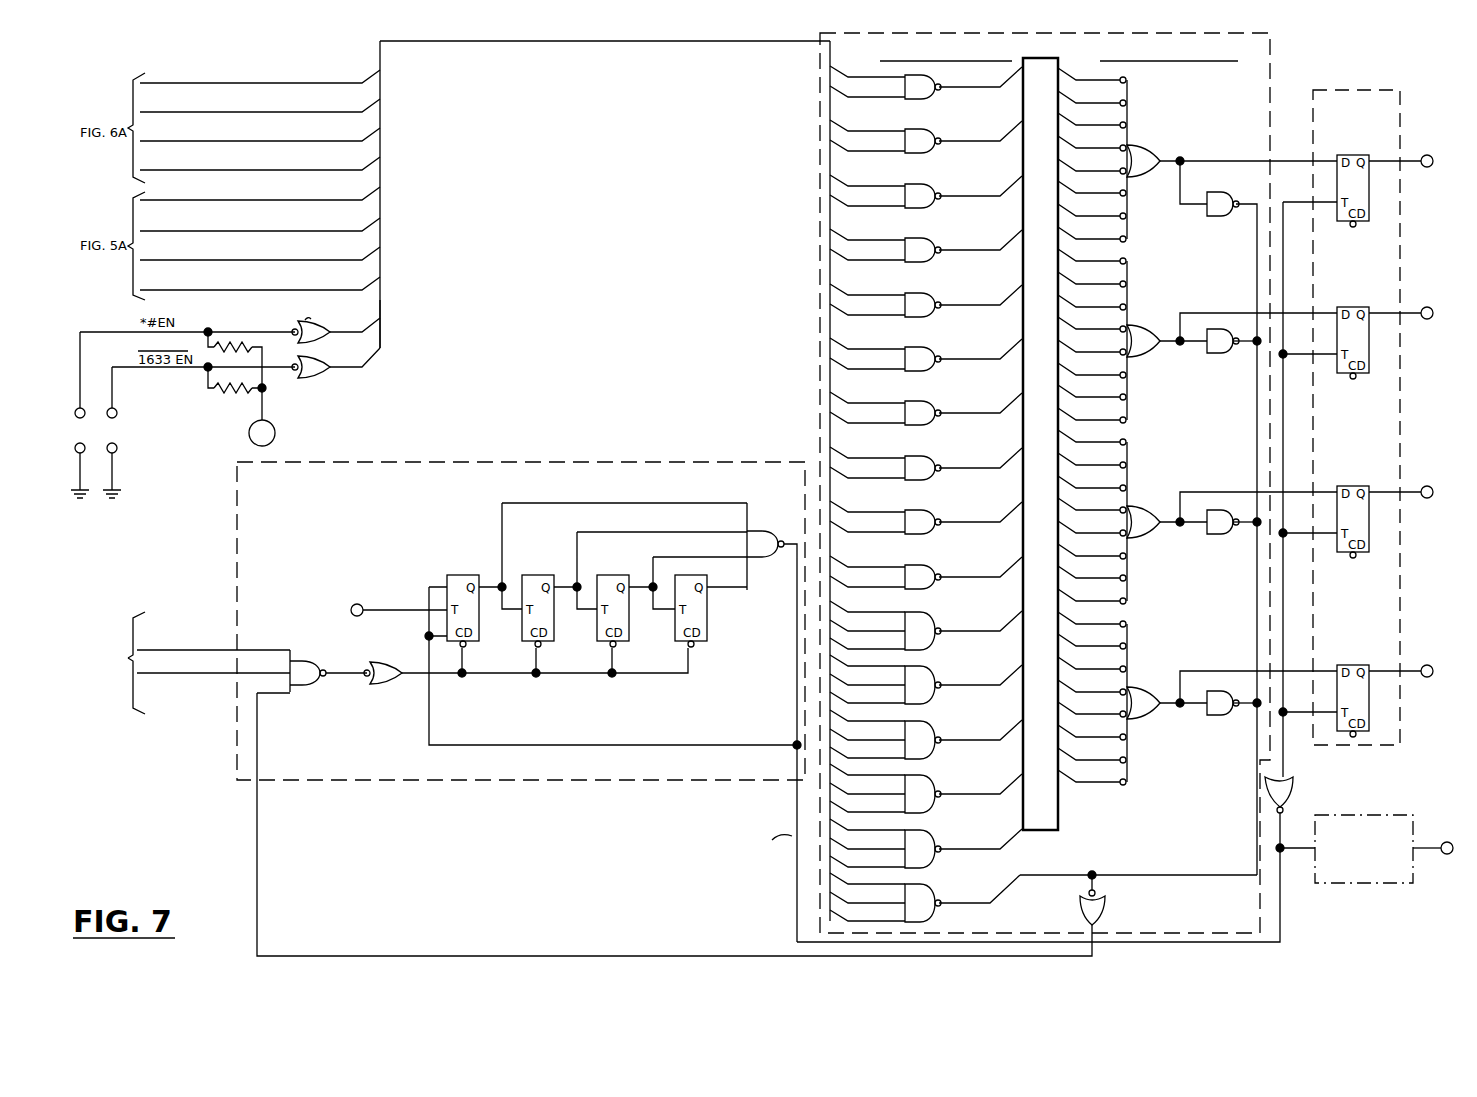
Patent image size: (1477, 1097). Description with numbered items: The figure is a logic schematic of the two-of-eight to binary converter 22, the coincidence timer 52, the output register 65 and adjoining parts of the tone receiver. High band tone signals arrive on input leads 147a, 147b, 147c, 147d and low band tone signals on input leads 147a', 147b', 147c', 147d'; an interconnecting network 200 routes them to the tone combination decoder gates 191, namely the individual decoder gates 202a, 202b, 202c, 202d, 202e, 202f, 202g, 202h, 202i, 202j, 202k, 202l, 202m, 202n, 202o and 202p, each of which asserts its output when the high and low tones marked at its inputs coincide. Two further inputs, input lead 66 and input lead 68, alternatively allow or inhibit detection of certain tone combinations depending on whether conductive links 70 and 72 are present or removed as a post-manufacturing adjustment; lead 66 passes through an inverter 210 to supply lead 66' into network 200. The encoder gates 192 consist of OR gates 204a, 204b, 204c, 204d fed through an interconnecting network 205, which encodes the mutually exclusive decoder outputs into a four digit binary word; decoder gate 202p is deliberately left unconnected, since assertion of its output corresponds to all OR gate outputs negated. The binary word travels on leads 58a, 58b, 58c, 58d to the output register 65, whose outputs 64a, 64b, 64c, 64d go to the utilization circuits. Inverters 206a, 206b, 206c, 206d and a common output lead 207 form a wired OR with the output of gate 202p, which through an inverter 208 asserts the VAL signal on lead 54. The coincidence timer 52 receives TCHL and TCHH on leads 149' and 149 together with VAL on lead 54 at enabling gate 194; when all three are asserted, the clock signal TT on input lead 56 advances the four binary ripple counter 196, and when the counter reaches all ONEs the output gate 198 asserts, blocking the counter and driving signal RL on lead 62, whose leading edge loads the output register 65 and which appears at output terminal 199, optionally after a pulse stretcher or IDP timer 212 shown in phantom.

The input lead 147a' is at (260, 67).
The input lead 147b' is at (260, 97).
The input lead 147c' is at (260, 126).
The input lead 147d' is at (260, 155).
The input lead 147a is at (260, 187).
The input lead 147b is at (260, 217).
The input lead 147c is at (260, 246).
The input lead 147d is at (260, 276).
The input lead 66 is at (230, 320).
The inverter 210 is at (314, 318).
The lead 66' is at (401, 324).
The input lead 68 is at (290, 380).
The conductive link 70 is at (80, 427).
The conductive link 72 is at (118, 436).
The coincidence timer 52 is at (538, 453).
The input lead 56 is at (416, 608).
The four binary ripple counter 196 is at (602, 558).
The output gate 198 is at (770, 560).
The enabling gate 194 is at (303, 690).
The lead 149' is at (185, 619).
The lead 149 is at (184, 699).
The lead 54 is at (482, 956).
The lead 62 is at (1285, 920).
The 2-of-8 to binary converter 22 is at (1278, 58).
The interconnecting network 200 is at (790, 218).
The decoder gates 191 is at (955, 52).
The encoder gates 192 is at (1154, 414).
The interconnecting network 205 is at (1053, 183).
The decoder gate 202a is at (922, 99).
The decoder gate 202b is at (922, 153).
The decoder gate 202c is at (922, 208).
The decoder gate 202d is at (922, 262).
The decoder gate 202e is at (922, 317).
The decoder gate 202f is at (922, 371).
The decoder gate 202g is at (922, 425).
The decoder gate 202h is at (922, 480).
The decoder gate 202i is at (922, 534).
The decoder gate 202j is at (922, 589).
The decoder gate 202k is at (922, 650).
The decoder gate 202l is at (922, 704).
The decoder gate 202m is at (922, 759).
The decoder gate 202n is at (922, 813).
The decoder gate 202o is at (922, 868).
The decoder gate 202p is at (922, 922).
The OR gate 204a is at (1148, 148).
The OR gate 204b is at (1148, 328).
The OR gate 204c is at (1148, 509).
The OR gate 204d is at (1148, 690).
The inverter 206a is at (1222, 192).
The inverter 206b is at (1222, 329).
The inverter 206c is at (1222, 510).
The inverter 206d is at (1222, 691).
The lead 58a is at (1283, 160).
The lead 58b is at (1269, 331).
The lead 58c is at (1264, 502).
The lead 58d is at (1262, 680).
The output register 65 is at (1372, 85).
The output 64a is at (1447, 120).
The output 64b is at (1447, 272).
The output 64c is at (1447, 451).
The output 64d is at (1447, 630).
The common output lead 207 is at (1253, 825).
The inverter 208 is at (1108, 904).
The pulse stretcher or IDP timer 212 is at (1352, 812).
The output terminal 199 is at (1445, 855).